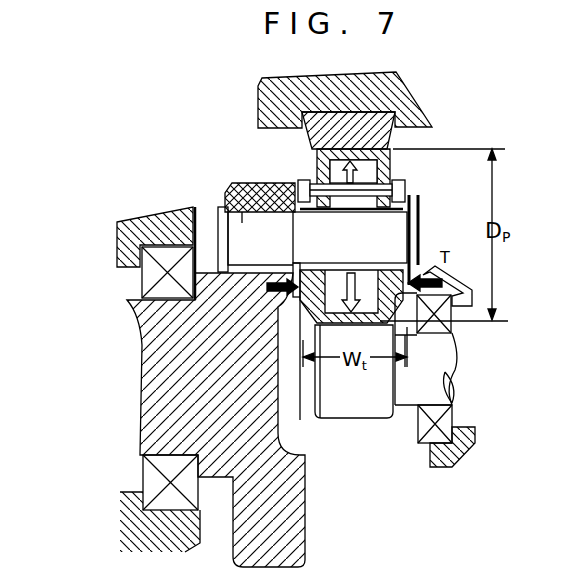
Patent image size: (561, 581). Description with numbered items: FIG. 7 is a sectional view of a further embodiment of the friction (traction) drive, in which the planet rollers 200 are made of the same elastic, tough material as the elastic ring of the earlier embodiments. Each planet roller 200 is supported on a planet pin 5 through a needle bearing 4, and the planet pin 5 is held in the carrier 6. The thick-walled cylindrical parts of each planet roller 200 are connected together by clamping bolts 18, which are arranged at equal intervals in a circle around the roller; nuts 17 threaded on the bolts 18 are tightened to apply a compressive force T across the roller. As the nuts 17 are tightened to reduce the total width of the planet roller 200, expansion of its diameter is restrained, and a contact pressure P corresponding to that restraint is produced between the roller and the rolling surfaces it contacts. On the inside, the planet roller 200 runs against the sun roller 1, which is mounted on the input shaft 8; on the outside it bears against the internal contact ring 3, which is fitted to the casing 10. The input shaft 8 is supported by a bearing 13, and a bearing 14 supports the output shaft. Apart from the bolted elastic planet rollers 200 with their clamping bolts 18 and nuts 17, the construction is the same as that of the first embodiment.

The sun roller 1 is at (363, 410).
The internal contact ring 3 is at (258, 86).
The needle bearing 4 is at (257, 207).
The planet pin 5 is at (225, 192).
The carrier 6 is at (295, 508).
The input shaft 8 is at (430, 368).
The casing 10 is at (412, 101).
The bearing 13 is at (452, 423).
The bearing 14 is at (153, 478).
The nut 17 is at (410, 177).
The clamping bolt 18 is at (368, 182).
The planet roller 200 is at (300, 295).